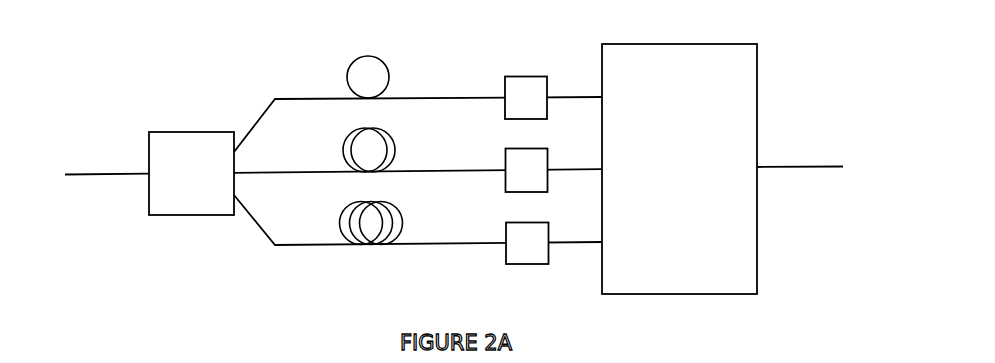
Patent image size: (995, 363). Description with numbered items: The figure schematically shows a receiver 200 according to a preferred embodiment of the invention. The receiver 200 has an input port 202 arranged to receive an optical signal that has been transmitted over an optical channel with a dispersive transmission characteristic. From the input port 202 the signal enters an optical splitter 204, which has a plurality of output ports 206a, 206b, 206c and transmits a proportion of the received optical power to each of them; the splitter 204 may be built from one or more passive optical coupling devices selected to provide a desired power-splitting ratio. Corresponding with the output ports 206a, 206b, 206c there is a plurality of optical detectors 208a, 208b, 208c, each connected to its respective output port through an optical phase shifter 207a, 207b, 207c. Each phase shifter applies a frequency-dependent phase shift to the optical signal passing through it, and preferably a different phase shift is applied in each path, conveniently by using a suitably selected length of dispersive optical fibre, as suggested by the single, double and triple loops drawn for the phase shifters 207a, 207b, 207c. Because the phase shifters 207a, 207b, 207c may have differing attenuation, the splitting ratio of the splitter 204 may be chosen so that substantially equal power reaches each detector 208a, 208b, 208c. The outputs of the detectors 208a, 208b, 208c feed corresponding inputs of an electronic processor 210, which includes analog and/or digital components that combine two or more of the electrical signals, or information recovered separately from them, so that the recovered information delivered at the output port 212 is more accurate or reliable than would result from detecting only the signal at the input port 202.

The receiver 200 is at (837, 0).
The input port 202 is at (118, 180).
The optical splitter 204 is at (190, 215).
The output port 206a is at (256, 124).
The output port 206b is at (258, 173).
The output port 206c is at (254, 221).
The optical phase shifter 207a is at (387, 62).
The optical phase shifter 207b is at (393, 130).
The optical phase shifter 207c is at (395, 202).
The optical detector 208a is at (512, 76).
The optical detector 208b is at (518, 148).
The optical detector 208c is at (517, 264).
The electronic processor 210 is at (760, 248).
The output port 212 is at (786, 166).